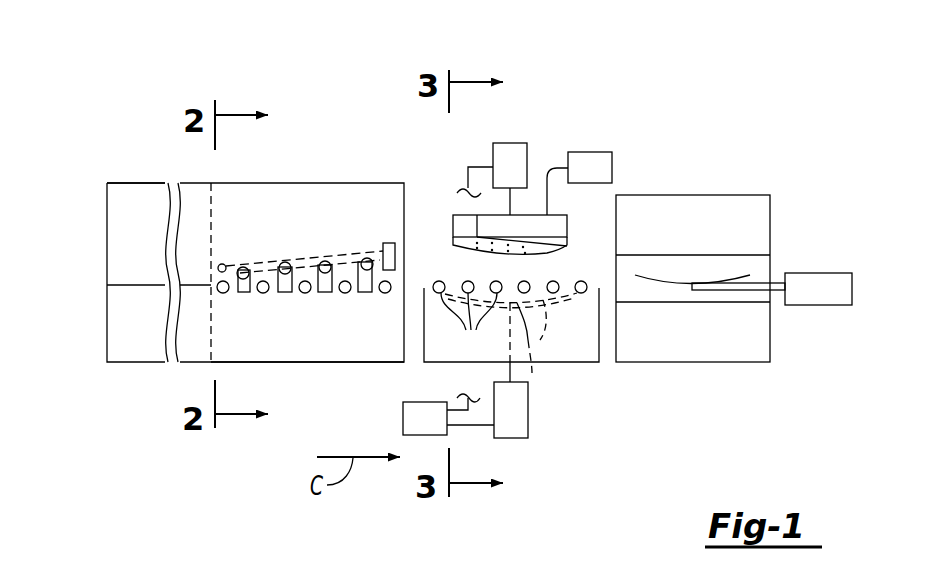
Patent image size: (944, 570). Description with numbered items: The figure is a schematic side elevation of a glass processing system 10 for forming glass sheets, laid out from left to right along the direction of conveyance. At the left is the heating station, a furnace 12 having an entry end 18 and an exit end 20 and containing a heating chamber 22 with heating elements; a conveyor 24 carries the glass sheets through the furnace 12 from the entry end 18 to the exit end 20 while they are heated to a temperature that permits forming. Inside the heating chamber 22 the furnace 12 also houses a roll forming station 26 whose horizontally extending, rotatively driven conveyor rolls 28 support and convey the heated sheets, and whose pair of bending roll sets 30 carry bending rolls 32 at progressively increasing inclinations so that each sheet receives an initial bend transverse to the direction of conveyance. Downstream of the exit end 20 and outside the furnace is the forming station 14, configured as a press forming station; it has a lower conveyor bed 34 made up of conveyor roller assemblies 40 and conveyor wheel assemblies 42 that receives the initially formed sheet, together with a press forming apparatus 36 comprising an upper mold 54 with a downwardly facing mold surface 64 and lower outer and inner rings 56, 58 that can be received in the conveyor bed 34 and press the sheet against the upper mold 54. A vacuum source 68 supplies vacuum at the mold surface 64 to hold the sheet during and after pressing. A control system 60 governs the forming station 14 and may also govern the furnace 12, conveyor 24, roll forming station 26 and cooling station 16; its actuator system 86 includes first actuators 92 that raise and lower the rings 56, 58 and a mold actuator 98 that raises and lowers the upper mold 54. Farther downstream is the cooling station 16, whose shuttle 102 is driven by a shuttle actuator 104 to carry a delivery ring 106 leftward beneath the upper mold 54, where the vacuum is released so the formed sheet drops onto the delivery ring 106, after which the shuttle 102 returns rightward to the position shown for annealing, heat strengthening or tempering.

The glass processing system 10 is at (297, 68).
The furnace 12 is at (148, 152).
The forming station 14 is at (482, 157).
The cooling station 16 is at (718, 182).
The entry end 18 is at (133, 183).
The exit end 20 is at (350, 362).
The heating chamber 22 is at (195, 342).
The conveyor 24 is at (135, 285).
The roll forming station 26 is at (302, 172).
The conveyor rolls 28 is at (263, 293).
The bending roll sets 30 is at (297, 255).
The bending rolls 32 is at (244, 267).
The conveyor bed 34 is at (429, 281).
The press forming apparatus 36 is at (575, 312).
The conveyor roller assemblies 40 is at (469, 327).
The conveyor wheel assemblies 42 is at (587, 281).
The upper mold 54 is at (453, 223).
The outer ring 56 is at (533, 380).
The inner ring 58 is at (540, 340).
The control system 60 is at (393, 418).
The mold surface 64 is at (549, 256).
The vacuum source 68 is at (590, 152).
The actuator system 86 is at (530, 447).
The first actuators 92 is at (515, 422).
The mold actuator 98 is at (507, 150).
The shuttle 102 is at (760, 278).
The shuttle actuator 104 is at (822, 305).
The delivery ring 106 is at (727, 282).